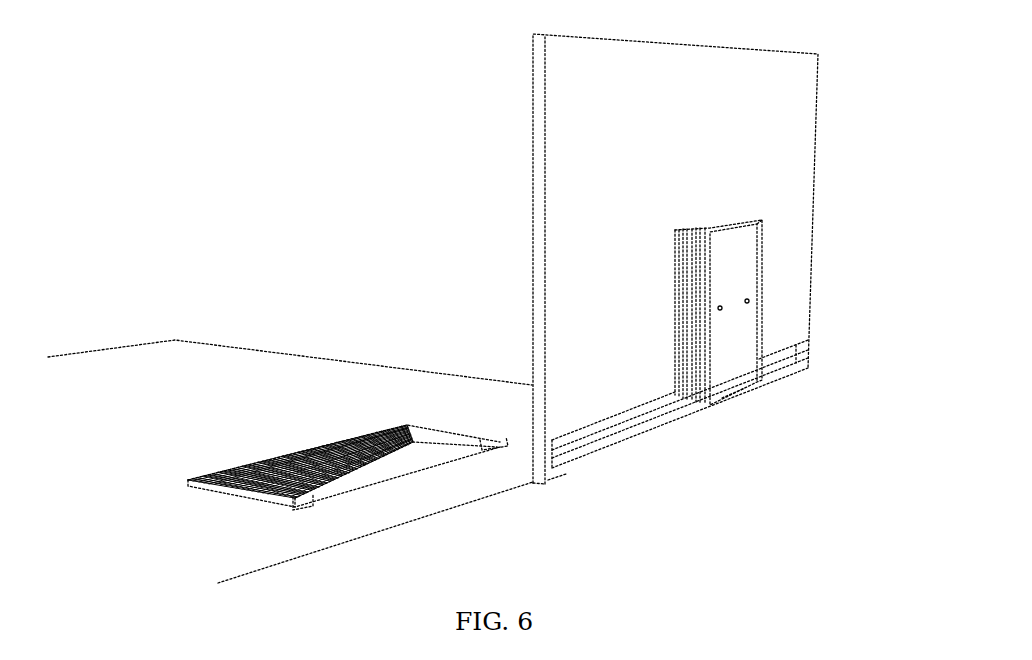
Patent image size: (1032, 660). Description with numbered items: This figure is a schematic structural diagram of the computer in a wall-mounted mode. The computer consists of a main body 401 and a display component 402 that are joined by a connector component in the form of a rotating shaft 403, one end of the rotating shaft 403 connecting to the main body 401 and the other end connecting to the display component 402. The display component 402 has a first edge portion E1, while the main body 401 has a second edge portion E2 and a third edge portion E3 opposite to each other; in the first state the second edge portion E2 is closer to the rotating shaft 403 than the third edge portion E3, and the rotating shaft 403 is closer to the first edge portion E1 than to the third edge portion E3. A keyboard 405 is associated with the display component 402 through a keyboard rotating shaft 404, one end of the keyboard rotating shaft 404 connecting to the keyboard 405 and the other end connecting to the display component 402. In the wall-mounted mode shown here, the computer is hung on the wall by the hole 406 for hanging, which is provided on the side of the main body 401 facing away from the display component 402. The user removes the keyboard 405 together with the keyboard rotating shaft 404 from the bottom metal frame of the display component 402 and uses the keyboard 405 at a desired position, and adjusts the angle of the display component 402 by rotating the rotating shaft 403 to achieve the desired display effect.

The main body 401 is at (753, 393).
The display component 402 is at (787, 98).
The rotating shaft 403 is at (700, 423).
The keyboard rotating shaft 404 is at (290, 510).
The keyboard 405 is at (322, 445).
The hole for hanging 406 is at (749, 303).
The first edge portion E1 is at (557, 481).
The second edge portion E2 is at (732, 393).
The third edge portion E3 is at (750, 223).